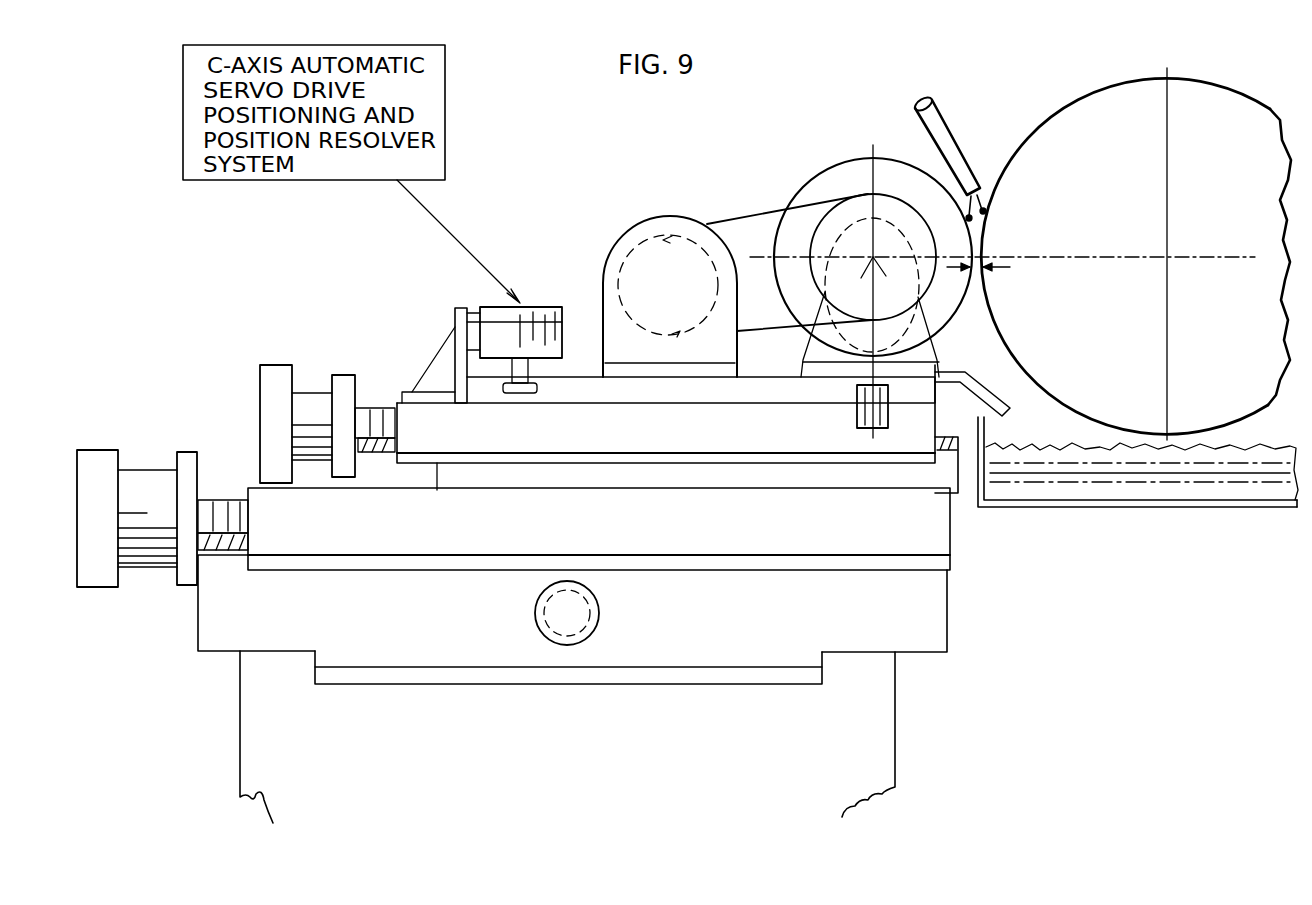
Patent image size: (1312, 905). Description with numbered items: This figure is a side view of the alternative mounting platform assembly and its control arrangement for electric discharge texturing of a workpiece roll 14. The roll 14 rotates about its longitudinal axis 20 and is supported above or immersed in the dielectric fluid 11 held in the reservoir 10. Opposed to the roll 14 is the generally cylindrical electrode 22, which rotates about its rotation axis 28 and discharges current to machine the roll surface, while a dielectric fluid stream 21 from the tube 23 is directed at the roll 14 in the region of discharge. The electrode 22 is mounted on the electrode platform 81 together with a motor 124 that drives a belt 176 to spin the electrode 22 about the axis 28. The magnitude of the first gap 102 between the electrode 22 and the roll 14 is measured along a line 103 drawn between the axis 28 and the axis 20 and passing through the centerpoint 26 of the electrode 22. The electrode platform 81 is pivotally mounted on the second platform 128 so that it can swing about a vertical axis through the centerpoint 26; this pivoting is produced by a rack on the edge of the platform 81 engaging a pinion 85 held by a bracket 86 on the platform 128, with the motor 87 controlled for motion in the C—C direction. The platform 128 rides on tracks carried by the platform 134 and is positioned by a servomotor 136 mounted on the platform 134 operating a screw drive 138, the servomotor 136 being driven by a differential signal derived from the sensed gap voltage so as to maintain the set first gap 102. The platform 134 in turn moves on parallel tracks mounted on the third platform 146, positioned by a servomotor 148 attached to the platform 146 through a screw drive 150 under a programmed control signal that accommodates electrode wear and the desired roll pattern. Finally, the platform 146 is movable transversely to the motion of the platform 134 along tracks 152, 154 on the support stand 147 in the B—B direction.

The reservoir 10 is at (1068, 506).
The dielectric fluid 11 is at (1172, 490).
The roll 14 is at (1100, 360).
The longitudinal axis 20 is at (1160, 254).
The dielectric fluid stream 21 is at (983, 202).
The electrode 22 is at (822, 187).
The tube 23 is at (921, 117).
The centerpoint 26 is at (887, 280).
The rotation axis 28 is at (852, 281).
The electrode platform 81 is at (978, 376).
The pinion 85 is at (503, 385).
The bracket 86 is at (447, 358).
The motor 87 is at (540, 318).
The first gap 102 is at (977, 278).
The line 103 is at (1052, 262).
The motor 124 is at (648, 258).
The second platform 128 is at (930, 424).
The second platform 134 is at (932, 537).
The servomotor 136 is at (262, 396).
The screw drive 138 is at (370, 408).
The third platform 146 is at (930, 606).
The support stand 147 is at (722, 720).
The servomotor 148 is at (97, 452).
The screw drive 150 is at (220, 500).
The track 152 is at (262, 688).
The track 154 is at (877, 689).
The drive belt 176 is at (757, 218).